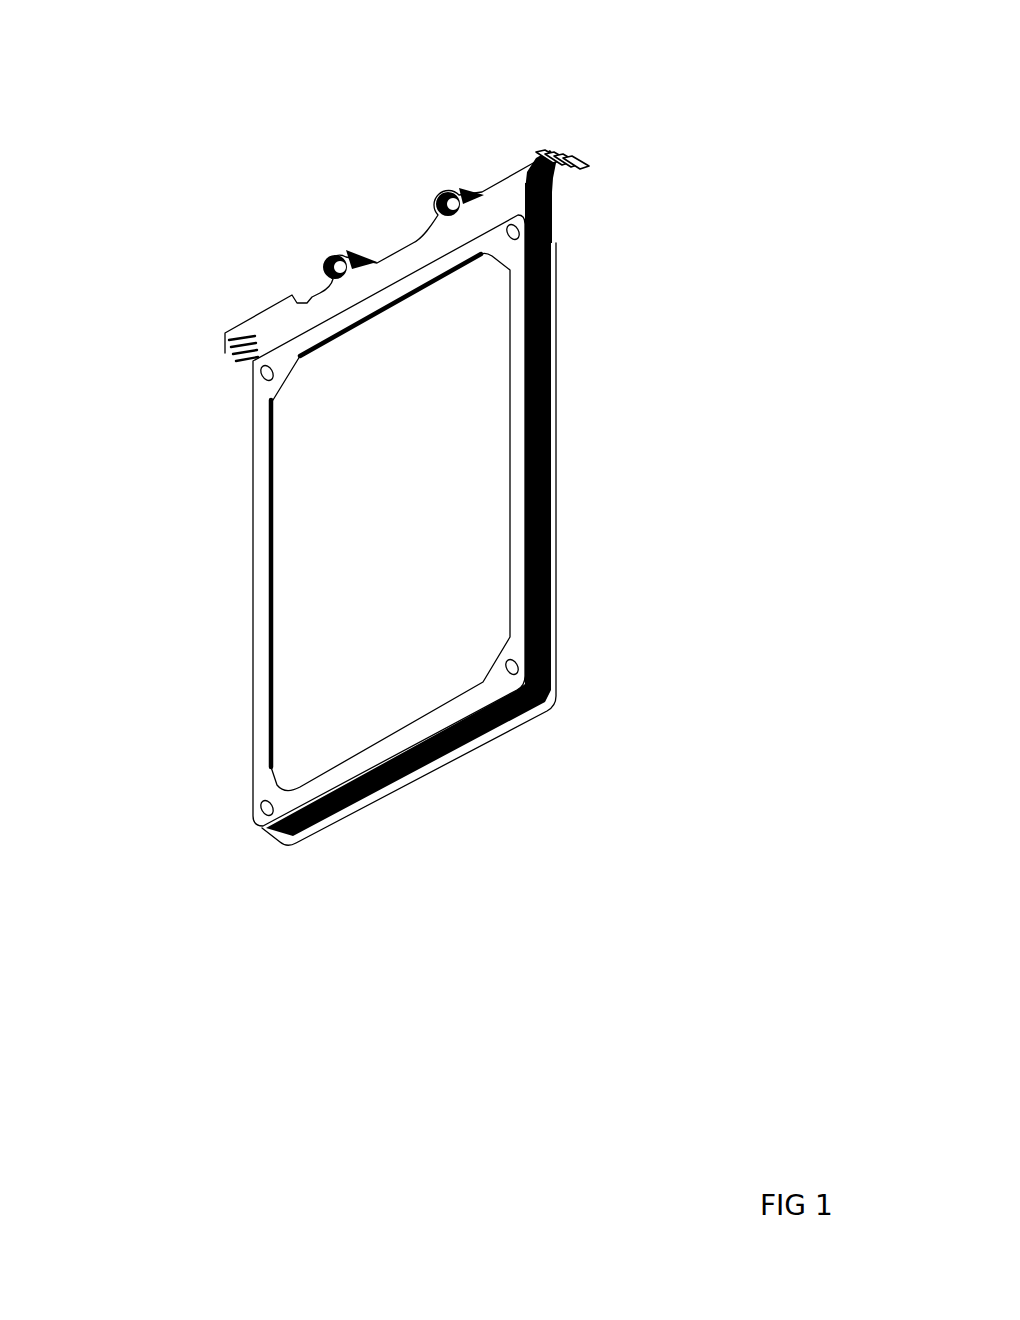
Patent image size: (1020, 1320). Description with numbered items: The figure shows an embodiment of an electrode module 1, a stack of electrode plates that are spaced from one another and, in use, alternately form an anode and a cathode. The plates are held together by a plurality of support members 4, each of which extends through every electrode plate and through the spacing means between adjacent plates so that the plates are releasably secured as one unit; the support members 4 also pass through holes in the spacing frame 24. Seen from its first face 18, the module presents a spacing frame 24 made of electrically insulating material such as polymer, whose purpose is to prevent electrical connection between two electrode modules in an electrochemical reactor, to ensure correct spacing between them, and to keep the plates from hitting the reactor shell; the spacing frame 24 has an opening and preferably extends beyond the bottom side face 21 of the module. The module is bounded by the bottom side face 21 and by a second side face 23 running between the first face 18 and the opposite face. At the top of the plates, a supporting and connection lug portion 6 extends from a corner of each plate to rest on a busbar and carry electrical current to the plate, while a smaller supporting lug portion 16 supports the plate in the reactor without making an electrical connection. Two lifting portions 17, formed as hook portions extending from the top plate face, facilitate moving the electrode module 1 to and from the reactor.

The electrode module 1 is at (395, 455).
The support member 4 is at (530, 228).
The supporting and connection lug portion 6 is at (558, 150).
The supporting lug portion 16 is at (573, 104).
The lifting portion 17 is at (336, 252).
The first face 18 is at (298, 494).
The bottom side face 21 is at (456, 750).
The second side face 23 is at (558, 406).
The spacing frame 24 is at (262, 668).